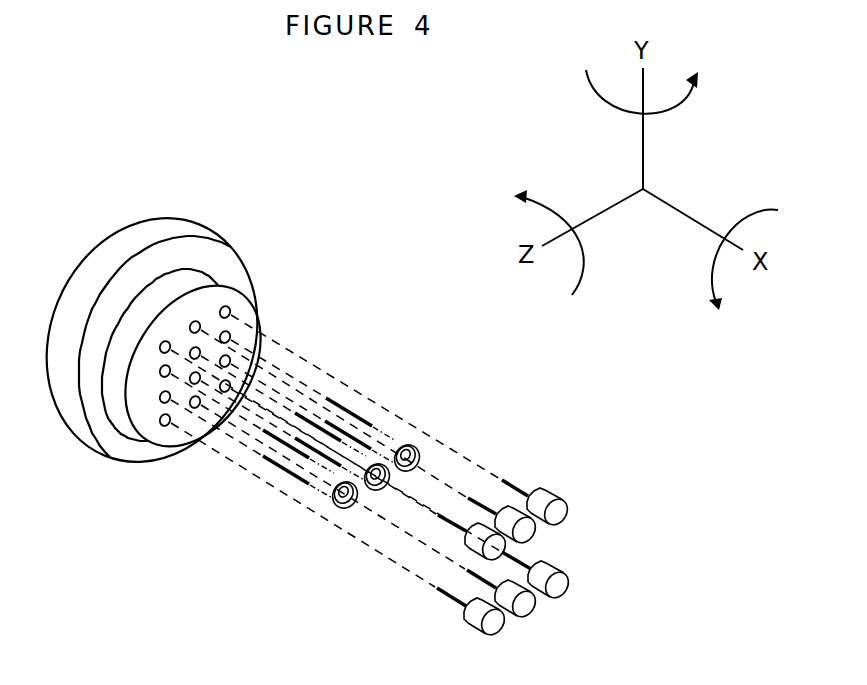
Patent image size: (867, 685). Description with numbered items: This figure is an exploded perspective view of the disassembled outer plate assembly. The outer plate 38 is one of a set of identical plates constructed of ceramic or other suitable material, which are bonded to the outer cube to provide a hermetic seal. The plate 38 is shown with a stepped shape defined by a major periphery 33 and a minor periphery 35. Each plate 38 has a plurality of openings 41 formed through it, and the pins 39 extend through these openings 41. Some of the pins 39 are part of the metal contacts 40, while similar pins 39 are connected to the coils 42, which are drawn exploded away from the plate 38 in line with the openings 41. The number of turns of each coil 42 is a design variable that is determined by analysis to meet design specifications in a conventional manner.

The major periphery 33 is at (152, 233).
The minor periphery 35 is at (182, 283).
The outer plate 38 is at (175, 503).
The pins 39 is at (351, 411).
The metal contacts 40 is at (544, 500).
The openings 41 is at (232, 310).
The coils 42 is at (413, 449).